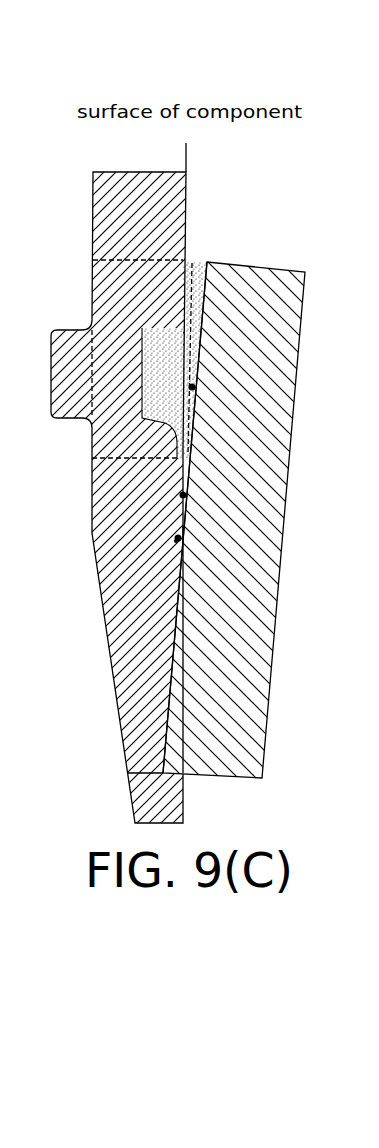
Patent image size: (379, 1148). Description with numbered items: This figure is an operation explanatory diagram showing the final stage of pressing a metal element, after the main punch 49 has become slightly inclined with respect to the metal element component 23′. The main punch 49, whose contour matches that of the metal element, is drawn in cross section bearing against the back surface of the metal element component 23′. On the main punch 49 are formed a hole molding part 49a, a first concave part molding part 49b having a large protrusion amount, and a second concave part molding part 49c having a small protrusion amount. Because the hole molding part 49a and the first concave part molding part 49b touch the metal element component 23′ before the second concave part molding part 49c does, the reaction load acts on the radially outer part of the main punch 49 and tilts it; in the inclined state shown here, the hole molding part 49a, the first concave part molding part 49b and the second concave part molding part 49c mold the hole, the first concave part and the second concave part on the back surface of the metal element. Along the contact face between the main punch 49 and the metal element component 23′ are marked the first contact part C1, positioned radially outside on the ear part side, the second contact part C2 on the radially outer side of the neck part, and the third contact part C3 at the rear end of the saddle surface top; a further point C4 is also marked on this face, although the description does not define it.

The metal element component 23′ is at (190, 205).
The main punch 49 is at (307, 300).
The hole molding part 49a is at (141, 386).
The first concave part molding part 49b is at (185, 282).
The second concave part molding part 49c is at (185, 479).
The first contact part C1 is at (192, 387).
The second contact part C2 is at (183, 495).
The third contact part C3 is at (178, 538).
The point C4 is at (176, 541).